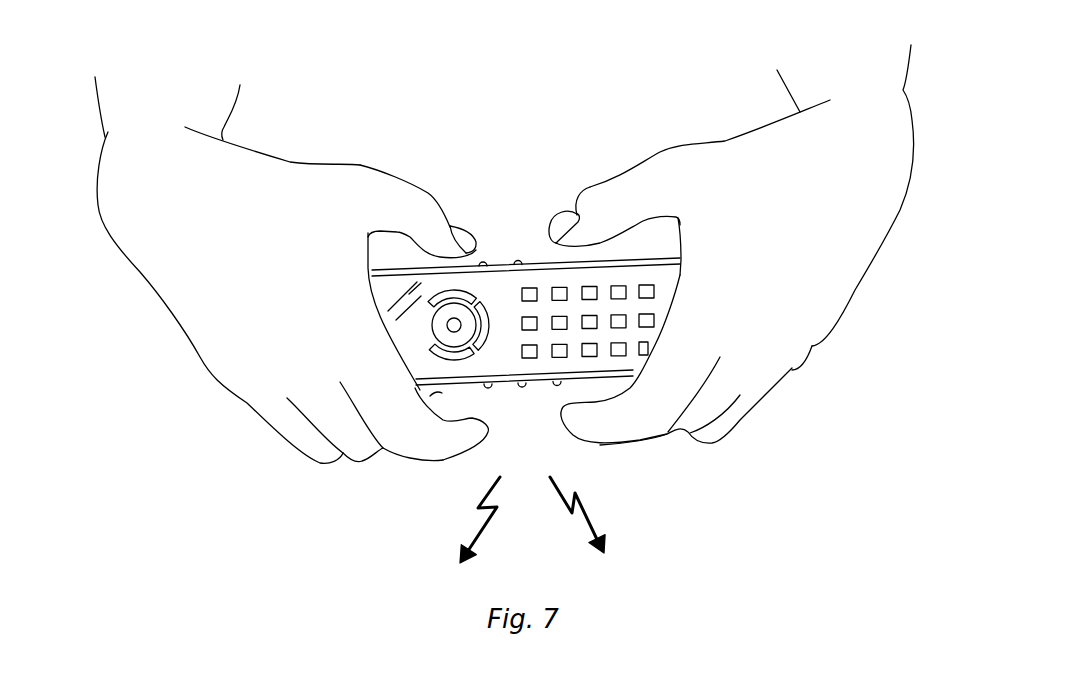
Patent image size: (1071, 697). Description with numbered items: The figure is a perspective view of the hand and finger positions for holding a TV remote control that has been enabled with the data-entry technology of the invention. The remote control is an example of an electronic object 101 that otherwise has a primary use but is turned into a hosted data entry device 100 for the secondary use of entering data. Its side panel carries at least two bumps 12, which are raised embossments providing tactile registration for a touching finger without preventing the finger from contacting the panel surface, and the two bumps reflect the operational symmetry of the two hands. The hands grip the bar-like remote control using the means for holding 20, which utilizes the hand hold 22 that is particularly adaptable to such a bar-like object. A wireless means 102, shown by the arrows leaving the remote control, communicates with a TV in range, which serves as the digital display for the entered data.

The bump 12 is at (497, 387).
The means for holding 20 is at (345, 469).
The hand hold 22 is at (587, 388).
The hosted data entry device 100 is at (456, 194).
The electronic object 101 is at (505, 278).
The wireless means 102 is at (593, 508).